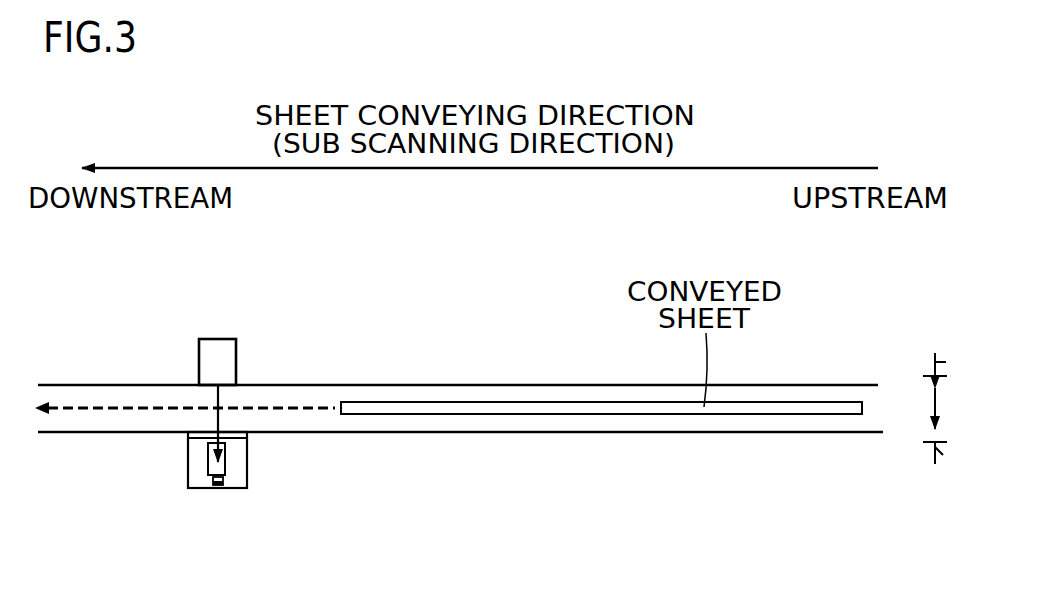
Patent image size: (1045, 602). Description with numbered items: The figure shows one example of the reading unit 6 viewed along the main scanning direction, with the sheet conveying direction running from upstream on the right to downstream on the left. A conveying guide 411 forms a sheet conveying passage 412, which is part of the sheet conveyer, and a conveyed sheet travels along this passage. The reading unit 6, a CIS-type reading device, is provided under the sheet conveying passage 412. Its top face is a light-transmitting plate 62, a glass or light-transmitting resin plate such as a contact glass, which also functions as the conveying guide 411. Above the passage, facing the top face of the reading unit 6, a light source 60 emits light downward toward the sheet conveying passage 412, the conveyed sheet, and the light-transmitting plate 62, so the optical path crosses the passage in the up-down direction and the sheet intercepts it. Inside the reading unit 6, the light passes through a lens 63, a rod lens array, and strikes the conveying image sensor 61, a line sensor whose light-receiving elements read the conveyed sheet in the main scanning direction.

The reading unit 6 is at (228, 392).
The light source 60 is at (217, 350).
The conveying image sensor 61 is at (224, 481).
The light-transmitting plate 62 is at (233, 436).
The lens 63 is at (226, 453).
The conveying guide 411 is at (478, 374).
The sheet conveying passage 412 is at (567, 398).